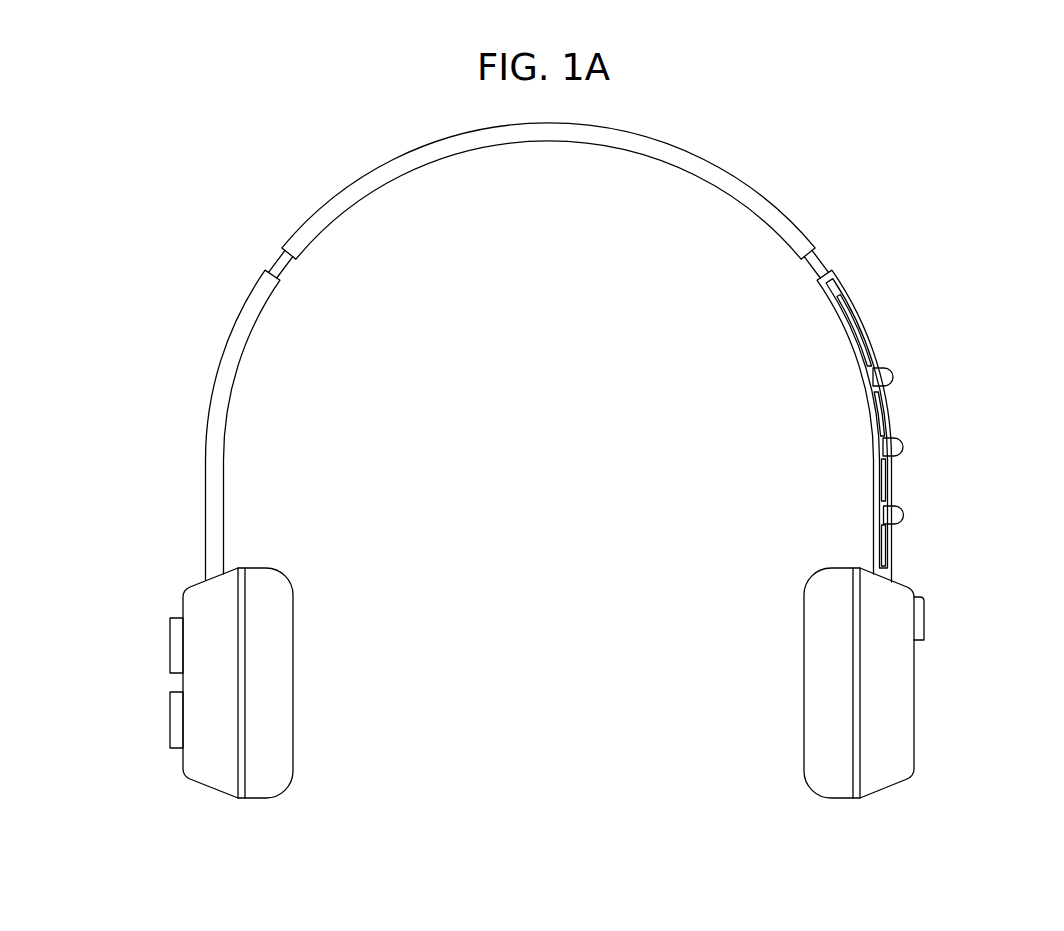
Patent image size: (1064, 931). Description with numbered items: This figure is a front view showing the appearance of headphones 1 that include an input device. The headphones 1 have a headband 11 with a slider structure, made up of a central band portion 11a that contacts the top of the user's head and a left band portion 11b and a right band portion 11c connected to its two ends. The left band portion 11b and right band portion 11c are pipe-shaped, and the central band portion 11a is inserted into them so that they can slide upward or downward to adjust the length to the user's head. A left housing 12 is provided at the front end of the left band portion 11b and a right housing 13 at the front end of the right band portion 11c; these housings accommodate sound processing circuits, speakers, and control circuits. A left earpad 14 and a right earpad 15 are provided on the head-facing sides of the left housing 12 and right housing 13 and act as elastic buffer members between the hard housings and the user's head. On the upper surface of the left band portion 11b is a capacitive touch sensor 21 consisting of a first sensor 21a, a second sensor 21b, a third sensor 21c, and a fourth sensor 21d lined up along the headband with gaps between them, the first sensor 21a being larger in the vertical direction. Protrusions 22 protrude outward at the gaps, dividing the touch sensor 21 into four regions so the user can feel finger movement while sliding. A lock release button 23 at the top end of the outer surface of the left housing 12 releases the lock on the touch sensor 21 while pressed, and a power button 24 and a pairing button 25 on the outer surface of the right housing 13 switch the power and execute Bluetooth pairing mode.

The headphones 1 is at (925, 175).
The headband 11 is at (338, 200).
The central band portion 11a is at (741, 183).
The left band portion 11b is at (838, 283).
The right band portion 11c is at (254, 297).
The left housing 12 is at (916, 715).
The right housing 13 is at (202, 790).
The left earpad 14 is at (805, 703).
The right earpad 15 is at (294, 697).
The touch sensor 21 is at (1010, 310).
The first sensor 21a is at (865, 337).
The second sensor 21b is at (890, 415).
The third sensor 21c is at (890, 480).
The fourth sensor 21d is at (890, 552).
The protrusion 22 is at (895, 377).
The lock release button 23 is at (924, 618).
The power button 24 is at (181, 613).
The pairing button 25 is at (181, 750).